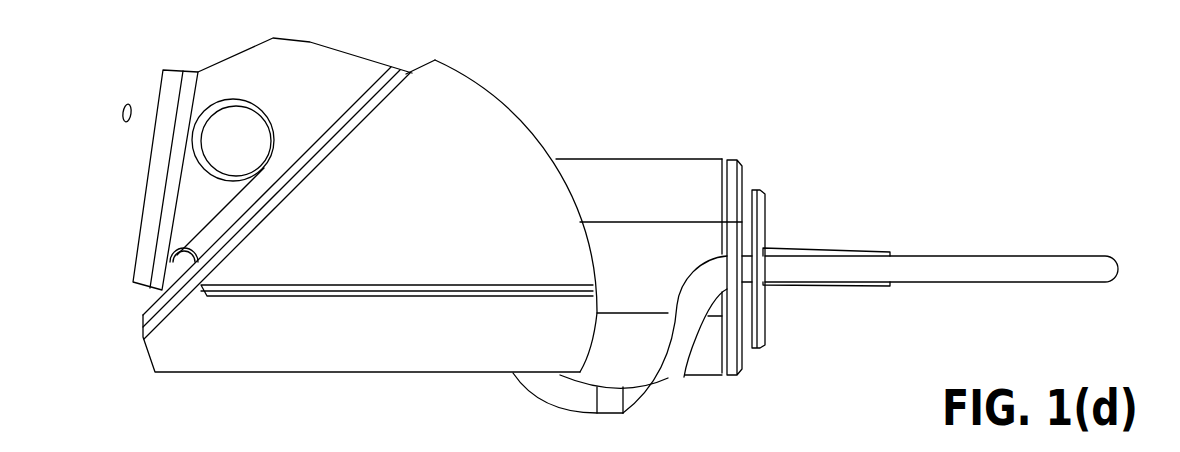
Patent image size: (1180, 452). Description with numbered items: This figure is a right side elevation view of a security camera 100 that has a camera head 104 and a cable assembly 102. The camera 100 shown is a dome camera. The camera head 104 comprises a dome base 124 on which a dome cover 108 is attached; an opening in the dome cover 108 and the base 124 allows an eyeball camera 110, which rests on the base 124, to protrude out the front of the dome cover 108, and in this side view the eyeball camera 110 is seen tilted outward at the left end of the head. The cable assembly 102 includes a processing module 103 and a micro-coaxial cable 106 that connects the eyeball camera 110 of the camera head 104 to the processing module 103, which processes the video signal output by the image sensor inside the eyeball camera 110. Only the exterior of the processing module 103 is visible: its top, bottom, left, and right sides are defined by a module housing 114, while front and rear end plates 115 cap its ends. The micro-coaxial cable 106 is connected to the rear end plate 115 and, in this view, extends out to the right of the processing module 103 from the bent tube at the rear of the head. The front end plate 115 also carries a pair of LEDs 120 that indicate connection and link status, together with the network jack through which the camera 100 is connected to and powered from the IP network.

The security camera 100 is at (607, 239).
The cable assembly 102 is at (933, 304).
The processing module 103 is at (615, 145).
The camera head 104 is at (478, 239).
The micro-coaxial cable 106 is at (1017, 266).
The dome cover 108 is at (443, 165).
The eyeball camera 110 is at (243, 70).
The module housing 114 is at (670, 282).
The end plate 115 is at (731, 163).
The LEDs 120 is at (761, 208).
The dome base 124 is at (283, 356).